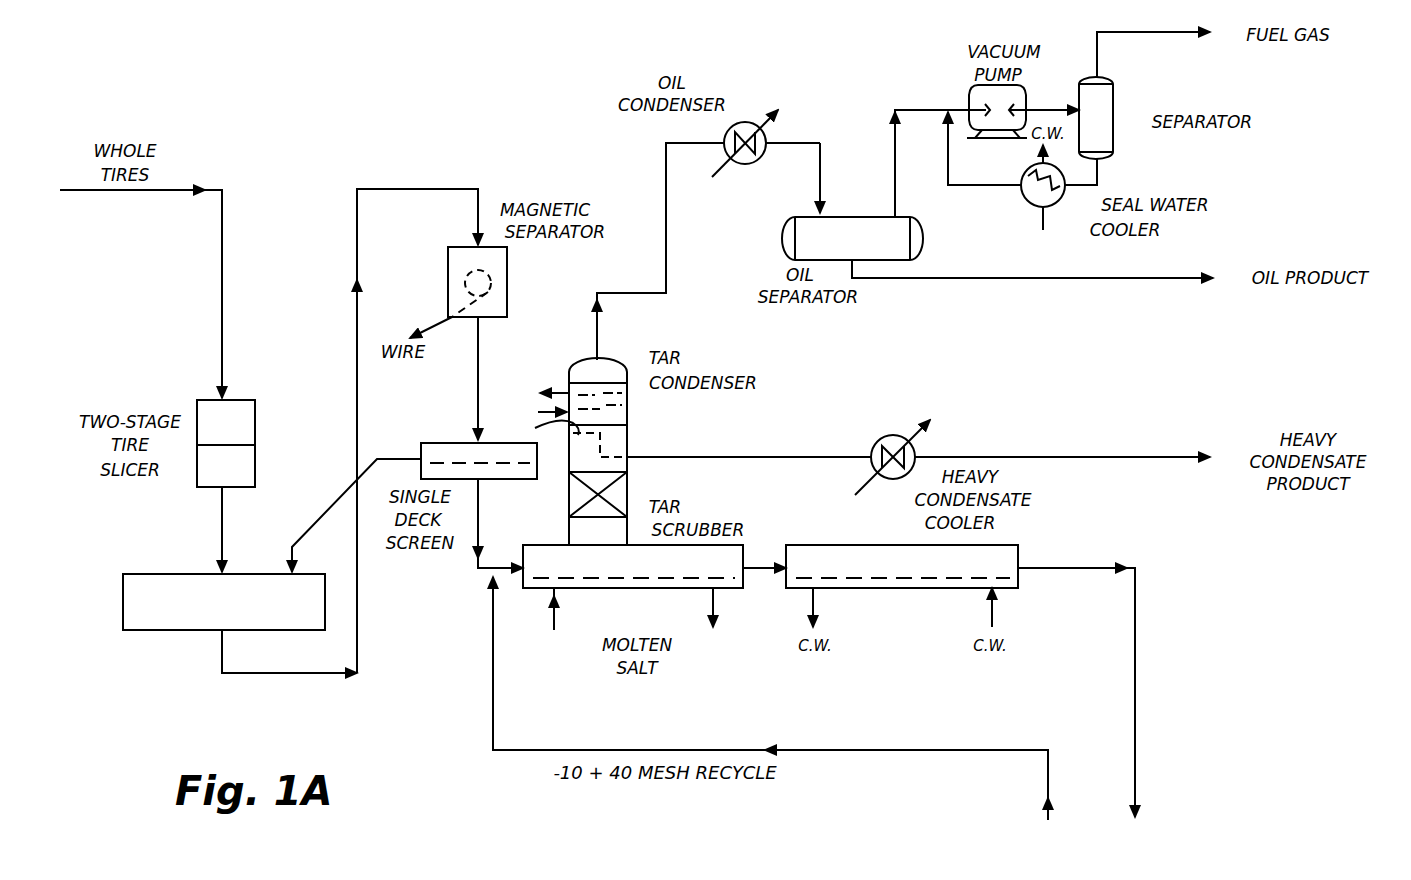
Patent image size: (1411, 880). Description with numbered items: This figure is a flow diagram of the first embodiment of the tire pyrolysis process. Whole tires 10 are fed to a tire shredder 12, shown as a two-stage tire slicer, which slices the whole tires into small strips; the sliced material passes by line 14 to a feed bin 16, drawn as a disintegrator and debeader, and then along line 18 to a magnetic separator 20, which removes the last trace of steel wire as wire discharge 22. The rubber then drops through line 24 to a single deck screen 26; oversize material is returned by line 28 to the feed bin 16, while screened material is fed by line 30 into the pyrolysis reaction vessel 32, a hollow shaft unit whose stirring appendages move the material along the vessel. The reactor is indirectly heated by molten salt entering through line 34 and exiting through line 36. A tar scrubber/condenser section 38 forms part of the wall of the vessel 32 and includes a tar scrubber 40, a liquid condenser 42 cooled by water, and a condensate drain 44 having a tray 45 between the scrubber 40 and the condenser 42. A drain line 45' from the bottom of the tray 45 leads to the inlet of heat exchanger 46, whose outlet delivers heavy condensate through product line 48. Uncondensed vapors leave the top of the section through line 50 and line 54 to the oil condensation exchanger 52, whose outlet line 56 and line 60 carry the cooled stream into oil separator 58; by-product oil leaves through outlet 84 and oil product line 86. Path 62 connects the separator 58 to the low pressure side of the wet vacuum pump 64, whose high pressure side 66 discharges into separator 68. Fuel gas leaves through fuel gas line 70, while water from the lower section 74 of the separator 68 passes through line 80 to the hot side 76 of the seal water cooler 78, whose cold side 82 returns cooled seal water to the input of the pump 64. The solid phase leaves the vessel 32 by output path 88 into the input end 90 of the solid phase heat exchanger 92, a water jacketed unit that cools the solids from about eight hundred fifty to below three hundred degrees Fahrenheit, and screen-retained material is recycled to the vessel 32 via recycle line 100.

The whole tires 10 is at (225, 277).
The tire shredder 12 is at (255, 425).
The sliced tire line 14 is at (222, 522).
The feed bin 16 is at (157, 635).
The disintegrated rubber line 18 is at (357, 320).
The magnetic separator 20 is at (507, 268).
The wire discharge 22 is at (428, 318).
The rubber line to screen 24 is at (478, 390).
The single deck screen 26 is at (425, 443).
The oversize recycle line 28 is at (298, 553).
The screened rubber feed line 30 is at (483, 518).
The pyrolysis reaction vessel 32 is at (607, 590).
The molten salt inlet line 34 is at (552, 603).
The molten salt return line 36 is at (715, 600).
The tar scrubber/condenser section 38 is at (565, 486).
The tar scrubber 40 is at (628, 487).
The liquid condenser 42 is at (625, 400).
The condensate drain 44 is at (542, 427).
The tray 45 is at (630, 439).
The drain line 45' is at (749, 438).
The heat exchanger 46 is at (885, 435).
The condensate product line 48 is at (1115, 457).
The vapor line to oil condenser 50 is at (600, 375).
The exchanger 52 is at (763, 131).
The vapor inlet line 54 is at (666, 167).
The condenser outlet line 56 is at (793, 154).
The separator 58 is at (782, 232).
The condensate line to oil separator 60 is at (823, 160).
The path 62 is at (897, 200).
The wet vacuum pump 64 is at (968, 95).
The high pressure side 66 is at (1033, 108).
The separator 68 is at (1115, 92).
The fuel gas line 70 is at (1137, 33).
The lower section 74 is at (1110, 162).
The hot side 76 is at (1067, 205).
The seal water cooler 78 is at (1022, 202).
The line 80 is at (1098, 170).
The cold side 82 is at (1020, 178).
The oil outlet 84 is at (858, 260).
The oil product line 86 is at (1137, 280).
The output path 88 is at (762, 552).
The input end 90 is at (776, 578).
The solid phase heat exchanger 92 is at (882, 590).
The recycle line 100 is at (912, 750).